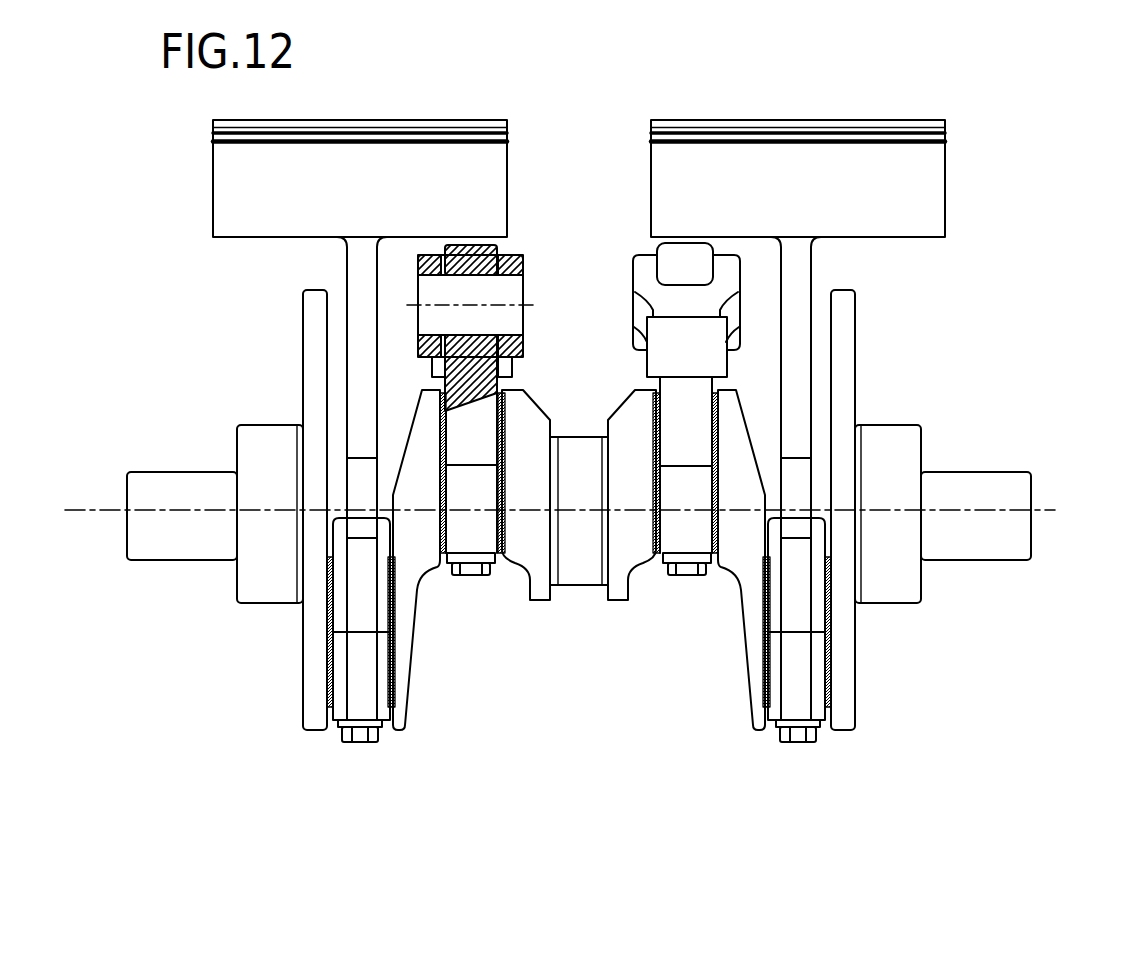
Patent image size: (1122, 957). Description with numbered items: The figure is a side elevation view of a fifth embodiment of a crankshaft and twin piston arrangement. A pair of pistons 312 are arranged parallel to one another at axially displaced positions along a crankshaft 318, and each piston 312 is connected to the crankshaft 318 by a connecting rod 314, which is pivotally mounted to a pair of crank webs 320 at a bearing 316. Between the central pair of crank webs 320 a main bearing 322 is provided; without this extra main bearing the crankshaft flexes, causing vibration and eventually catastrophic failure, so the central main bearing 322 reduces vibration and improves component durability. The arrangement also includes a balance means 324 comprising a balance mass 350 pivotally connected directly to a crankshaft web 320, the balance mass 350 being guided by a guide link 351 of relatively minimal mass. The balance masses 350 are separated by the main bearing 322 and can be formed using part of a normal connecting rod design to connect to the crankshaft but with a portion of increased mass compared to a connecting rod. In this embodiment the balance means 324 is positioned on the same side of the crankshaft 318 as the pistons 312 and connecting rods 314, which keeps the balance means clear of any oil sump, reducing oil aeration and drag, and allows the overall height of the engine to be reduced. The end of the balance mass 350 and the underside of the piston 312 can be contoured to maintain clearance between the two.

The piston 312 is at (248, 220).
The connecting rod 314 is at (362, 280).
The bearing 316 is at (297, 642).
The crankshaft 318 is at (185, 498).
The crank web 320 is at (530, 553).
The main bearing 322 is at (578, 598).
The balance means 324 is at (622, 238).
The balance mass 350 is at (763, 348).
The guide link 351 is at (648, 272).